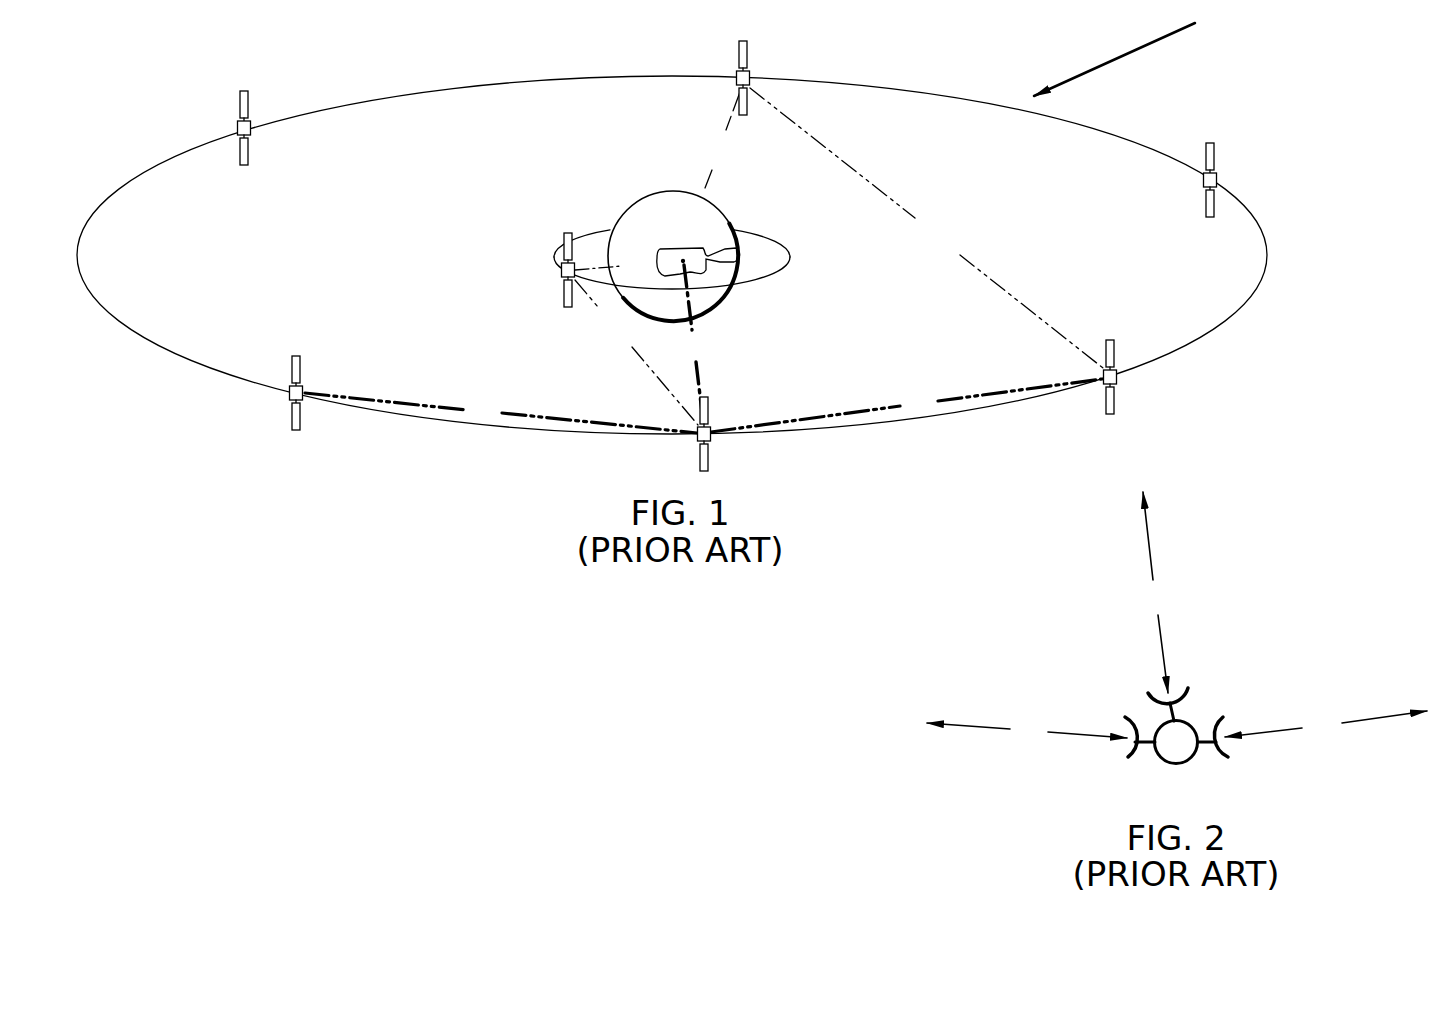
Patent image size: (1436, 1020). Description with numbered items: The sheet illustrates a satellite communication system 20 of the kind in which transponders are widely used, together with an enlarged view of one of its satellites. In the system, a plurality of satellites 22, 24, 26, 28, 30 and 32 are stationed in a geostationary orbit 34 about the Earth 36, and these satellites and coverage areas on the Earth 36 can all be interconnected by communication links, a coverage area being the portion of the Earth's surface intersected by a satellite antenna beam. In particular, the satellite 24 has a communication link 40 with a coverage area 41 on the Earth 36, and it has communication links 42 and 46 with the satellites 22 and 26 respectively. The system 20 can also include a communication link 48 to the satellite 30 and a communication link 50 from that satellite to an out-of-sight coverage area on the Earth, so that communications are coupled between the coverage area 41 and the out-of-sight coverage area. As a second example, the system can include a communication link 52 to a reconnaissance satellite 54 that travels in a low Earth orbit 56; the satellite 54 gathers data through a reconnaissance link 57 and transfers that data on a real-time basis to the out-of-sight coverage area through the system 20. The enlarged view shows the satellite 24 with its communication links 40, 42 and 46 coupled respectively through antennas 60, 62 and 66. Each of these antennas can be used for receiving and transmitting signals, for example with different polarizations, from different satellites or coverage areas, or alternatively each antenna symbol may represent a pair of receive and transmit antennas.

In FIG. 1, the satellite communication system 20 is at (1133, 48).
In FIG. 1, the satellite 22 is at (288, 393).
In FIG. 1, the satellite 24 is at (712, 437).
In FIG. 2, the satellite 24 is at (1188, 762).
In FIG. 1, the satellite 26 is at (1118, 377).
In FIG. 1, the satellite 28 is at (1218, 180).
In FIG. 1, the satellite 30 is at (752, 77).
In FIG. 1, the satellite 32 is at (252, 128).
In FIG. 1, the geostationary orbit 34 is at (1222, 328).
In FIG. 1, the Earth 36 is at (655, 193).
In FIG. 1, the communication link 40 is at (689, 338).
In FIG. 2, the communication link 40 is at (1154, 592).
In FIG. 1, the coverage area 41 is at (737, 258).
In FIG. 1, the communication link 42 is at (501, 413).
In FIG. 2, the communication link 42 is at (1027, 735).
In FIG. 1, the communication link 46 is at (906, 405).
In FIG. 2, the communication link 46 is at (1326, 726).
In FIG. 1, the communication link 48 is at (926, 228).
In FIG. 1, the communication link 50 is at (720, 140).
In FIG. 1, the communication link 52 is at (636, 352).
In FIG. 1, the reconnaissance satellite 54 is at (560, 270).
In FIG. 1, the low Earth orbit 56 is at (778, 272).
In FIG. 1, the reconnaissance link 57 is at (595, 262).
In FIG. 2, the antenna 60 is at (1186, 690).
In FIG. 2, the antenna 62 is at (1126, 758).
In FIG. 2, the antenna 66 is at (1228, 752).